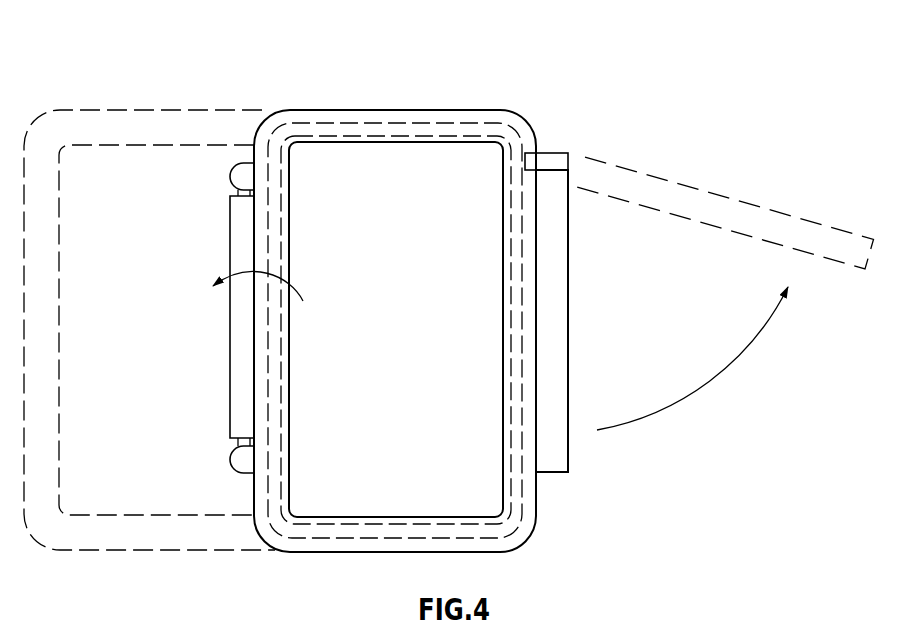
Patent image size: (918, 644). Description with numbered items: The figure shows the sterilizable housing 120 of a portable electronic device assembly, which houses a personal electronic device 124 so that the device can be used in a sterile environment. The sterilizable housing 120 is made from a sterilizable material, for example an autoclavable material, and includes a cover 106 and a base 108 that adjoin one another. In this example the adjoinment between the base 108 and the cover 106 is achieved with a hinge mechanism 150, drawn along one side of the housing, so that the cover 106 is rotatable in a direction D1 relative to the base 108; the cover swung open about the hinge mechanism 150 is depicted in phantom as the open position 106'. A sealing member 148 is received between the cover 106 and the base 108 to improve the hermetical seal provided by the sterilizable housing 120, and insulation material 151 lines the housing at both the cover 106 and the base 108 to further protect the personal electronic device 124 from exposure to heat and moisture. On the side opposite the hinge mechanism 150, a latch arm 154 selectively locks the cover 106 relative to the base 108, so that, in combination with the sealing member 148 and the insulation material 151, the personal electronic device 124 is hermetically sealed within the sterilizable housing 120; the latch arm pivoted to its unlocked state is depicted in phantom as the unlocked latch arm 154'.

The cover 106 is at (395, 304).
The cover in open position 106' is at (149, 304).
The base 108 is at (463, 110).
The sterilizable housing 120 is at (401, 99).
The personal electronic device 124 is at (418, 302).
The sealing member 148 is at (526, 150).
The hinge mechanism 150 is at (230, 242).
The insulation material 151 is at (508, 128).
The latch arm 154 is at (586, 321).
The unlocked latch arm 154' is at (725, 293).
The direction D1 is at (280, 272).